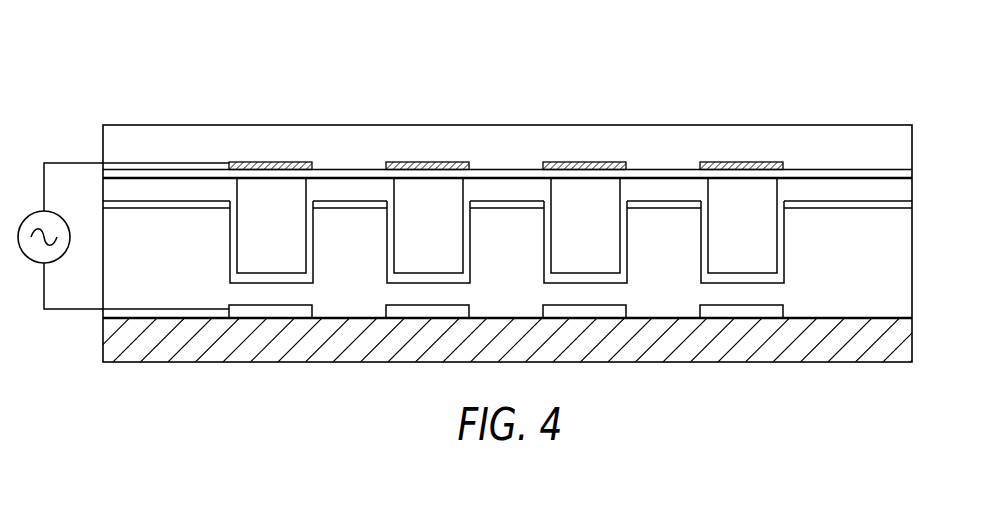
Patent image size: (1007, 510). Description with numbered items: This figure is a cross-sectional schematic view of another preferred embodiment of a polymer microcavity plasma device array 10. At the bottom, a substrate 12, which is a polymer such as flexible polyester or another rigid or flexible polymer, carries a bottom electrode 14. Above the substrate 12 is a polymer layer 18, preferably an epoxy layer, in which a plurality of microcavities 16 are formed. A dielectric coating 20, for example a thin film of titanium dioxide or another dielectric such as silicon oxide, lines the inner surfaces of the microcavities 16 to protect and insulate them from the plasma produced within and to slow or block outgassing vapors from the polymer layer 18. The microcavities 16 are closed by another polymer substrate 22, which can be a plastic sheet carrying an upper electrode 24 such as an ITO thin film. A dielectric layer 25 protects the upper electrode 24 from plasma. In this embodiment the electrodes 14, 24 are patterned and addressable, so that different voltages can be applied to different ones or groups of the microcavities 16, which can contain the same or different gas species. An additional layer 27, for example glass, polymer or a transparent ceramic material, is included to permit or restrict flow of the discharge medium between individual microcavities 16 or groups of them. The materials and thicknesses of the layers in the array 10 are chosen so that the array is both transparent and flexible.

The polymer microcavity plasma device array 10 is at (92, 64).
The substrate 12 is at (885, 343).
The bottom electrode 14 is at (785, 309).
The microcavities 16 is at (257, 233).
The polymer layer 18 is at (895, 267).
The dielectric coating 20 is at (277, 280).
The polymer substrate 22 is at (883, 148).
The upper electrode 24 is at (783, 165).
The dielectric layer 25 is at (112, 175).
The additional layer 27 is at (502, 192).